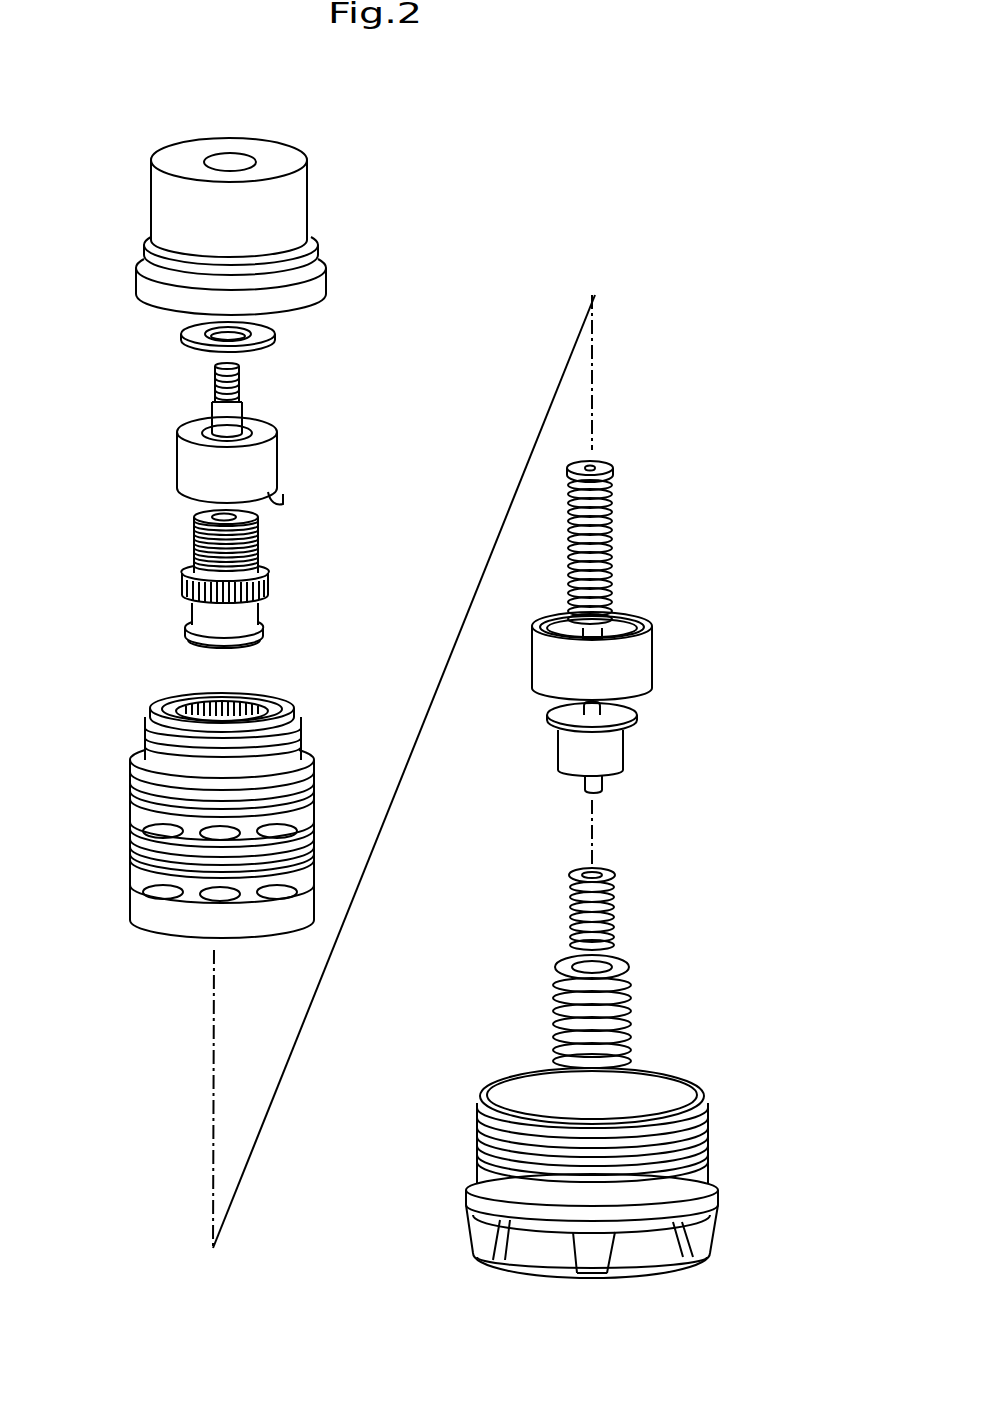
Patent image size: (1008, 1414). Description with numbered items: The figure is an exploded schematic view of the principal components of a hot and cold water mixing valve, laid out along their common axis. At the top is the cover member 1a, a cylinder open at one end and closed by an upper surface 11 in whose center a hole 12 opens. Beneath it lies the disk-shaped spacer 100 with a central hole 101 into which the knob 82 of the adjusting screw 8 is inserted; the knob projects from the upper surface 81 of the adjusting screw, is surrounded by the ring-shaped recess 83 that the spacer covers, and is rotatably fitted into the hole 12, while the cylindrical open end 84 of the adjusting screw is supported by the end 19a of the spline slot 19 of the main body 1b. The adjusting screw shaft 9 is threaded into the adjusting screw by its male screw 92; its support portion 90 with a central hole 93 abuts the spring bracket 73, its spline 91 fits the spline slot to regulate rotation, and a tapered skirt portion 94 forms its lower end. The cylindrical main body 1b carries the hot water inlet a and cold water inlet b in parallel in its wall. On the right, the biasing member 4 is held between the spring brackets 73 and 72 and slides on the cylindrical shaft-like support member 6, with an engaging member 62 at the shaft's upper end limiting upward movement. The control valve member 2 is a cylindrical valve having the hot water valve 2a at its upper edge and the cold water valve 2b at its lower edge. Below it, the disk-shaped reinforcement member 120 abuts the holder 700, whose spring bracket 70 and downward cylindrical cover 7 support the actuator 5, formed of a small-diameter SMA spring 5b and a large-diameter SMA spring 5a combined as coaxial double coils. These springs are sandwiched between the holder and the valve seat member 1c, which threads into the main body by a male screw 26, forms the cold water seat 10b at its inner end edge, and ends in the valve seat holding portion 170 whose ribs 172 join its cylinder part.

The cover member 1a is at (276, 191).
The upper surface 11 is at (277, 163).
The hole 12 is at (230, 160).
The spacer 100 is at (280, 321).
The hole 101 is at (251, 331).
The adjusting screw 8 is at (294, 434).
The knob 82 is at (240, 383).
The ring-shaped recess 83 is at (257, 423).
The upper surface 81 is at (263, 434).
The cylindrical open end 84 is at (318, 483).
The adjusting screw shaft 9 is at (157, 565).
The hole 93 is at (223, 517).
The support portion 90 is at (203, 513).
The male screw 92 is at (193, 547).
The spline 91 is at (182, 585).
The skirt portion 94 is at (178, 625).
The main body 1b is at (203, 814).
The spline slot 19 is at (197, 697).
The end of the spline slot 19a is at (270, 706).
The hot water inlet a is at (163, 832).
The cold water inlet b is at (199, 880).
The biasing member 4 is at (637, 512).
The spring bracket 73 is at (615, 470).
The engaging member 62 is at (624, 435).
The control valve member 2 is at (585, 645).
The hot water valve 2a is at (600, 611).
The cold water valve 2b is at (570, 667).
The spring bracket 72 is at (627, 614).
The holder 700 is at (676, 732).
The reinforcement member 120 is at (635, 702).
The spring bracket 70 is at (638, 724).
The cylindrical cover 7 is at (626, 748).
The support member 6 is at (603, 780).
The actuator 5 is at (538, 968).
The SMA spring 5b is at (570, 921).
The SMA spring 5a is at (558, 1017).
The valve seat member 1c is at (679, 1183).
The cold water seat 10b is at (702, 1082).
The male screw 26 is at (708, 1131).
The valve seat holding portion 170 is at (716, 1253).
The rib 172 is at (490, 1254).